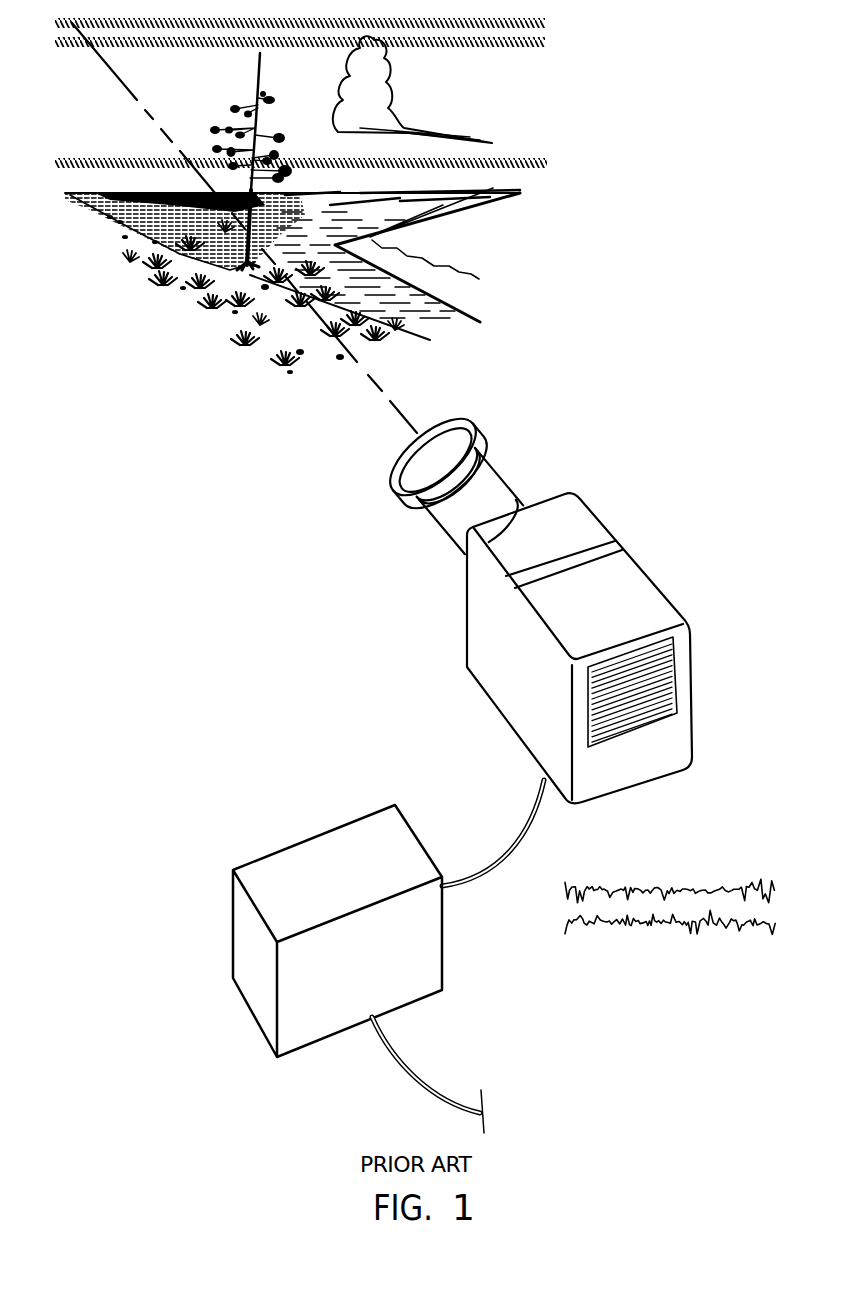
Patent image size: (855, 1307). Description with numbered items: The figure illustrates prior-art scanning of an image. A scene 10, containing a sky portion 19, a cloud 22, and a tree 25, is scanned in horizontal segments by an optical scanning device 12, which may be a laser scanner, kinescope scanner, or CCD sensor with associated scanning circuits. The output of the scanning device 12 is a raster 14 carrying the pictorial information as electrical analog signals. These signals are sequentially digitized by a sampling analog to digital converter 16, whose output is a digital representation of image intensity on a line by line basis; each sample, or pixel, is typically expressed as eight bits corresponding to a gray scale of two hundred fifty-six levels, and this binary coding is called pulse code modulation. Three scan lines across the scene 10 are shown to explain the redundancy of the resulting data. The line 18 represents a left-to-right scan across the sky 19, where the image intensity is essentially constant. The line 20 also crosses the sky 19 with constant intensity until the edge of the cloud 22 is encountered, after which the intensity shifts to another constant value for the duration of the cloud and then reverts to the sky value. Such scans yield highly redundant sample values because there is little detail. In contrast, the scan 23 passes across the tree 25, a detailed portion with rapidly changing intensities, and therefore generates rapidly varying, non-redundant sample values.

The scene 10 is at (158, 328).
The optical scanning device 12 is at (505, 478).
The raster 14 is at (655, 887).
The sampling analog to digital converter 16 is at (347, 825).
The line 18 is at (547, 18).
The sky portion 19 is at (125, 138).
The line 20 is at (547, 42).
The cloud 22 is at (400, 100).
The scan 23 is at (548, 160).
The tree 25 is at (258, 78).